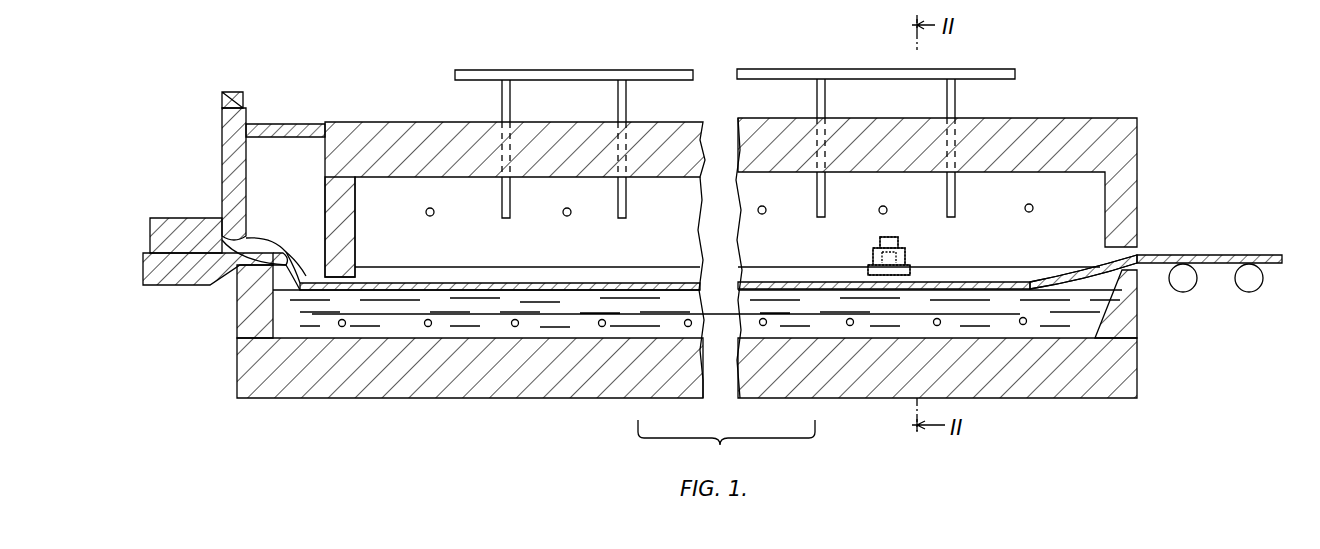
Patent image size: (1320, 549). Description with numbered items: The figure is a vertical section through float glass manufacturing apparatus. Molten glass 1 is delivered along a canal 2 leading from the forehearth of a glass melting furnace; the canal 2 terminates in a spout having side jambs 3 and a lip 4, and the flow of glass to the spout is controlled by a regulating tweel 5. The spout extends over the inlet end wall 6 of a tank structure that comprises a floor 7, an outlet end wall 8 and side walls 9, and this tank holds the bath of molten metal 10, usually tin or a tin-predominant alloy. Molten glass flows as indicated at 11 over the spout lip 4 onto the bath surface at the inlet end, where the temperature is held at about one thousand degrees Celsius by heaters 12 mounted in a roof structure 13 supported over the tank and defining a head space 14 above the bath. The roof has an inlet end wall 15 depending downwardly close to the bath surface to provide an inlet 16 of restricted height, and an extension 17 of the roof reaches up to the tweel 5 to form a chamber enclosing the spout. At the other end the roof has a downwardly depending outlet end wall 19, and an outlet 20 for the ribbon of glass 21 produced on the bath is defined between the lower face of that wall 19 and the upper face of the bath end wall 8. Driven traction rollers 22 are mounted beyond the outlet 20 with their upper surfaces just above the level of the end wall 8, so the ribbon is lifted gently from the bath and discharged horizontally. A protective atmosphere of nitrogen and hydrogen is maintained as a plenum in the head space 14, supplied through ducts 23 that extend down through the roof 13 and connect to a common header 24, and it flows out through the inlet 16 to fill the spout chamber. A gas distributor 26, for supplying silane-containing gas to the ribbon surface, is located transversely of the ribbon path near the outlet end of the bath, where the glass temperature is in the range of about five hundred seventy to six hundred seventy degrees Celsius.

The molten glass 1 is at (190, 228).
The canal 2 is at (178, 285).
The side jambs 3 is at (254, 246).
The lip 4 is at (278, 268).
The regulating tweel 5 is at (228, 132).
The inlet end wall 6 is at (258, 320).
The floor 7 is at (485, 375).
The outlet end wall 8 is at (1125, 310).
The side walls 9 is at (772, 268).
The bath of molten metal 10 is at (402, 325).
The molten glass flow 11 is at (296, 276).
The heaters 12 is at (433, 215).
The roof structure 13 is at (400, 135).
The head space 14 is at (598, 254).
The inlet end wall of roof structure 15 is at (350, 236).
The inlet 16 is at (352, 287).
The extension of the roof structure 17 is at (268, 142).
The outlet end wall of roof structure 19 is at (1115, 188).
The outlet 20 is at (1135, 253).
The ribbon of glass 21 is at (1217, 255).
The driven traction rollers 22 is at (1251, 283).
The ducts 23 is at (502, 199).
The common header 24 is at (568, 68).
The gas distributor 26 is at (917, 242).